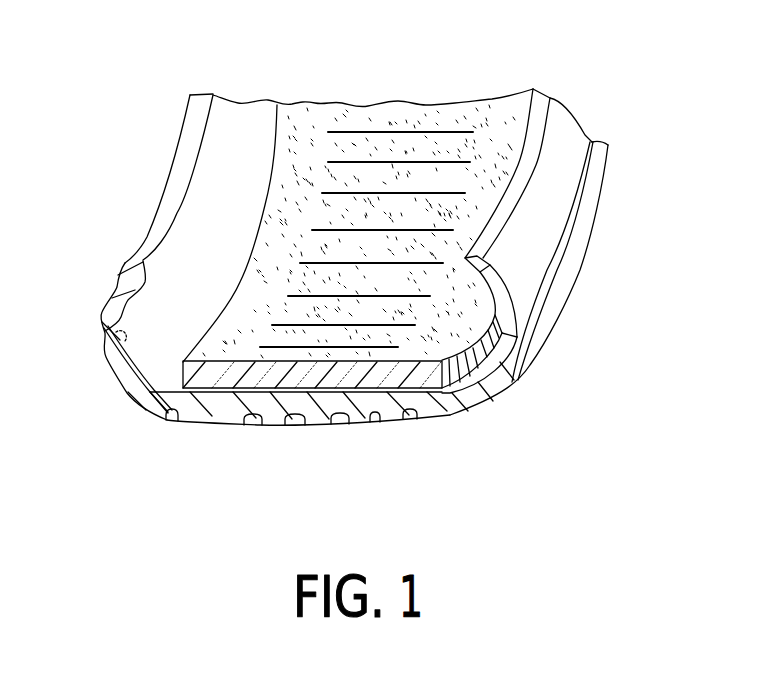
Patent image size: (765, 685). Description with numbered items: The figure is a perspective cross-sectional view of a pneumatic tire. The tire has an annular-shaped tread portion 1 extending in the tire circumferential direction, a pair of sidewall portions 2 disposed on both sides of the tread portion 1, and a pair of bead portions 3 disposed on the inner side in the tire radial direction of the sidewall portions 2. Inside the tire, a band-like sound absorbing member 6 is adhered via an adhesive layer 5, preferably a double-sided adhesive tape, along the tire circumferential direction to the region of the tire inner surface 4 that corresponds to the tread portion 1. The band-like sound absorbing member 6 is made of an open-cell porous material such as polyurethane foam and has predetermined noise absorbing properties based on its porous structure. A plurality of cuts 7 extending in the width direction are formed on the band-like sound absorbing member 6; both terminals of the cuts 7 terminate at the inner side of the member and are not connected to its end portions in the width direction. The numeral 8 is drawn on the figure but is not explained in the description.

The tread portion 1 is at (433, 425).
The sidewall portions 2 is at (107, 357).
The bead portions 3 is at (117, 282).
The tire inner surface 4 is at (122, 334).
The adhesive layer 5 is at (322, 427).
The band-like sound absorbing member 6 is at (312, 150).
The cuts 7 is at (387, 192).
The inner surface of sidewall 8 is at (203, 243).